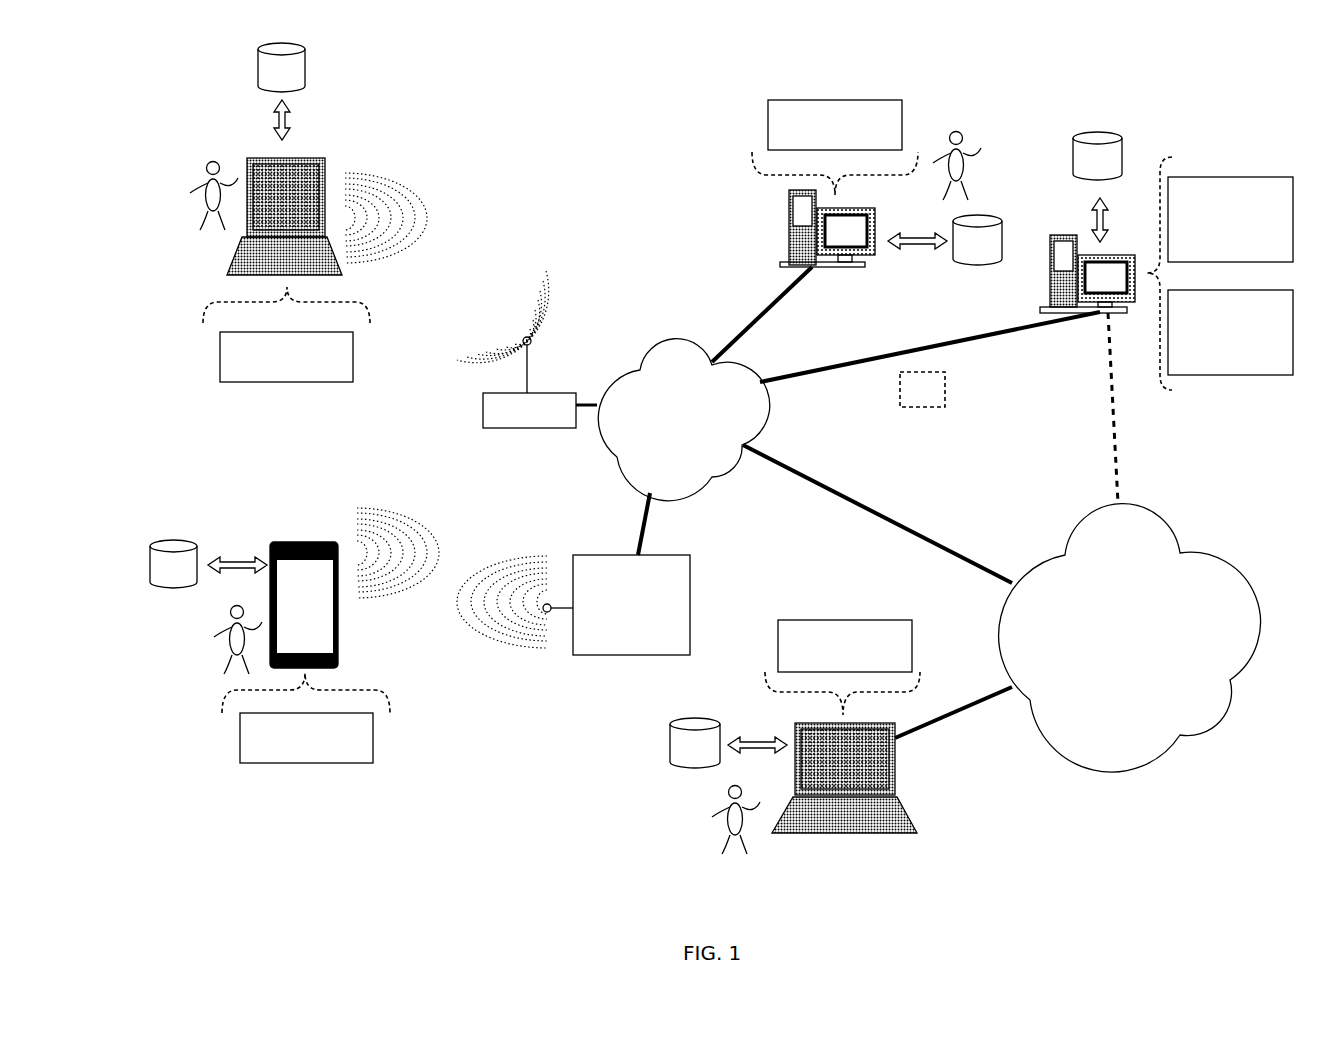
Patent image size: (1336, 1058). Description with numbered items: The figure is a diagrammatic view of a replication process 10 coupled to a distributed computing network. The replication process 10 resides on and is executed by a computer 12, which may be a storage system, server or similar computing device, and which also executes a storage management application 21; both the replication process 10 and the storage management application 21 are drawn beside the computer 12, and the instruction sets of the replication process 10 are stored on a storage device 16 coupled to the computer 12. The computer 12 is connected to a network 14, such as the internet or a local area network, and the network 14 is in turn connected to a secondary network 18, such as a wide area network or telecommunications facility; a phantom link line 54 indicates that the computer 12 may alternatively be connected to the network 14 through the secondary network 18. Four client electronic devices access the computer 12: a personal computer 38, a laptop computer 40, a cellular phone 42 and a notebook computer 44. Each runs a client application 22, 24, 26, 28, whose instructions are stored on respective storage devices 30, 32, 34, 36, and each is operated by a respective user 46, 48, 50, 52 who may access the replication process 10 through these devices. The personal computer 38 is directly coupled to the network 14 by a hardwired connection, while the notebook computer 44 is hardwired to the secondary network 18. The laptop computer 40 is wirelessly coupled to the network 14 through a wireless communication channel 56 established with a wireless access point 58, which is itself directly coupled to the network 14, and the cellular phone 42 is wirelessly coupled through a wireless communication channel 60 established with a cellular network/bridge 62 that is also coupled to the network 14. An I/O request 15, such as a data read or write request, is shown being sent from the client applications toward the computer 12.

The replication process 10 is at (1293, 210).
The computer 12 is at (1052, 252).
The network 14 is at (683, 420).
The I/O request 15 is at (898, 390).
The storage device 16 is at (1097, 187).
The secondary network 18 is at (1130, 638).
The storage management application 21 is at (1293, 322).
The client application 22 is at (902, 130).
The client application 24 is at (353, 365).
The client application 26 is at (375, 728).
The client application 28 is at (912, 645).
The storage device 30 is at (945, 240).
The storage device 32 is at (281, 91).
The storage device 34 is at (208, 564).
The storage device 36 is at (728, 743).
The client electronic device 38 is at (778, 215).
The client electronic device 40 is at (325, 182).
The client electronic device 42 is at (343, 592).
The client electronic device 44 is at (895, 772).
The user 46 is at (975, 145).
The user 48 is at (178, 185).
The user 50 is at (212, 618).
The user 52 is at (700, 808).
The phantom link line 54 is at (1085, 380).
The wireless communication channel 56 is at (470, 232).
The wireless access point (WAP) 58 is at (477, 410).
The wireless communication channel 60 is at (458, 557).
The cellular network/bridge 62 is at (690, 572).